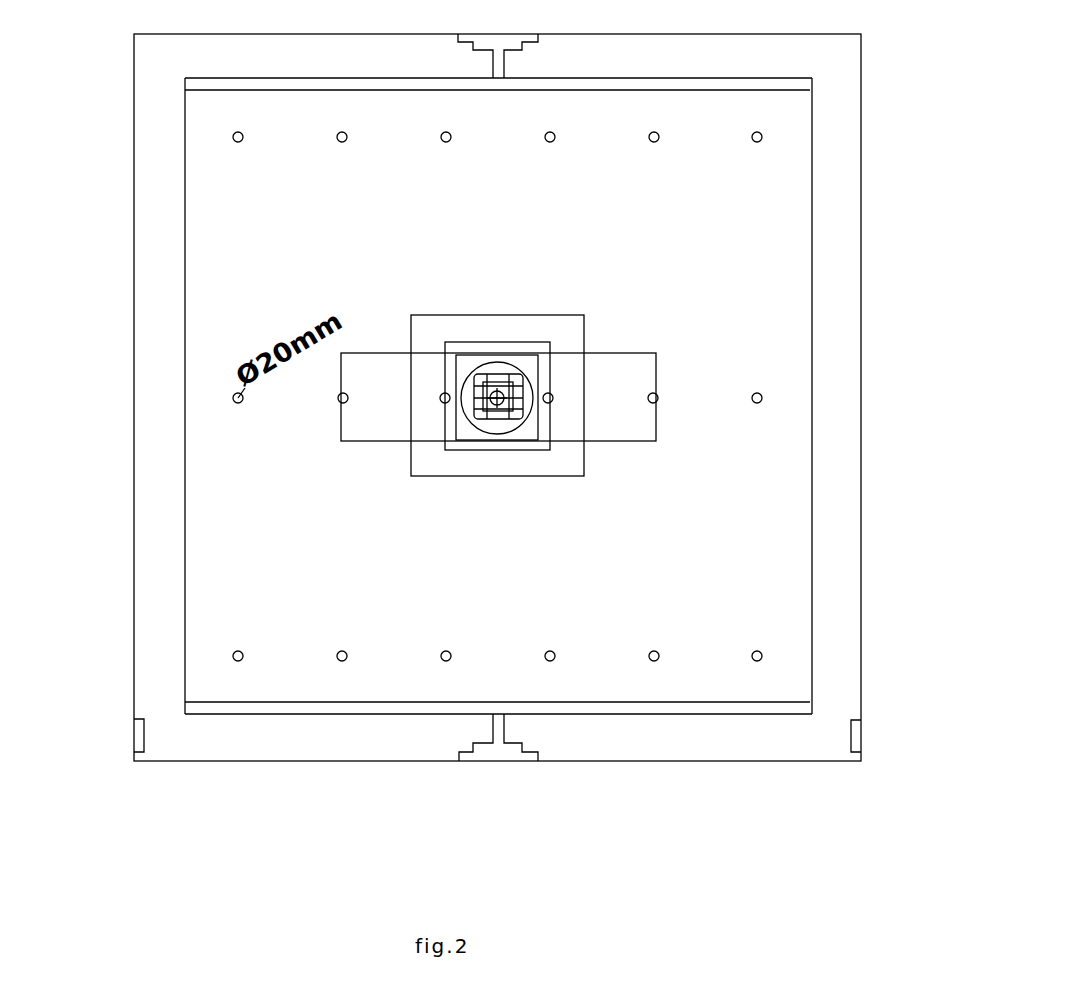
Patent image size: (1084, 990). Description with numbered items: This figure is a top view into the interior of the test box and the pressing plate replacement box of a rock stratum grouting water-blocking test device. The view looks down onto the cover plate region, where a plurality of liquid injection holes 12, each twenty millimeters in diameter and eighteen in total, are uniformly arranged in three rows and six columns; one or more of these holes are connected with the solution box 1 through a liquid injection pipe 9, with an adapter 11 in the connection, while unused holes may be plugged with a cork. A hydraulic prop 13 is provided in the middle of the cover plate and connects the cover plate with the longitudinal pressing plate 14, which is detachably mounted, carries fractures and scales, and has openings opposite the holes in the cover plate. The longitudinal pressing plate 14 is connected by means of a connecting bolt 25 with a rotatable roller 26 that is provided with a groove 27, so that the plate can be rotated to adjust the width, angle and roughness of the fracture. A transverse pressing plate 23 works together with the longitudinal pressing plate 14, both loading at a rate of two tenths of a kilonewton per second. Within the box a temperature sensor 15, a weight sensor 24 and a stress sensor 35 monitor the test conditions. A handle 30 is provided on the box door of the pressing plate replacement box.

The solution box 1 is at (487, 337).
The liquid injection pipe 9 is at (482, 351).
The adapter 11 is at (533, 334).
The liquid injection hole 12 is at (497, 396).
The hydraulic prop 13 is at (338, 548).
The longitudinal pressing plate 14 is at (498, 455).
The temperature sensor 15 is at (92, 696).
The transverse pressing plate 23 is at (886, 396).
The weight sensor 24 is at (446, 467).
The connecting bolt 25 is at (541, 473).
The rotatable roller 26 is at (573, 454).
The groove 27 is at (578, 360).
The handle 30 is at (534, 397).
The stress sensor 35 is at (895, 764).